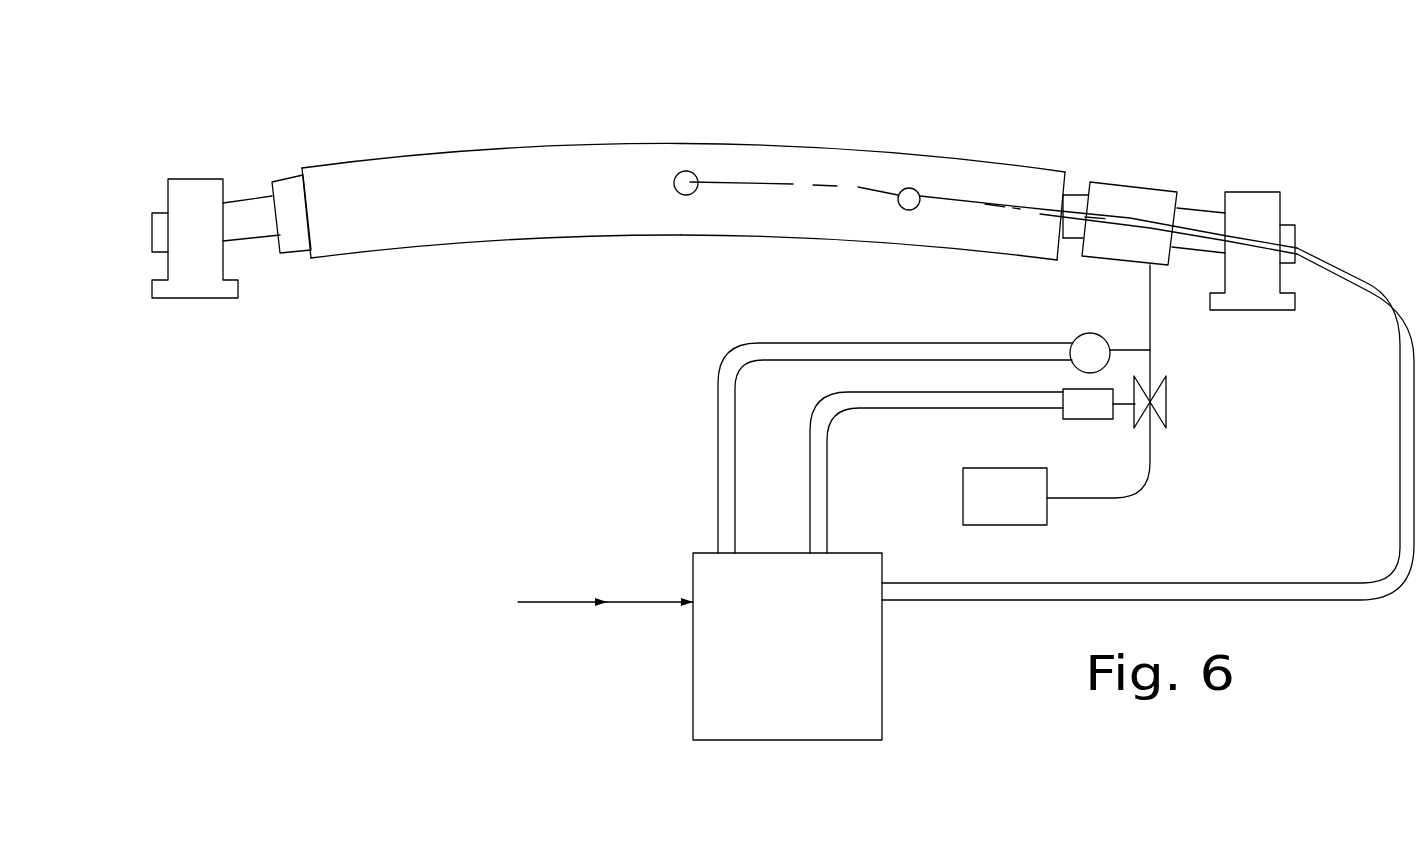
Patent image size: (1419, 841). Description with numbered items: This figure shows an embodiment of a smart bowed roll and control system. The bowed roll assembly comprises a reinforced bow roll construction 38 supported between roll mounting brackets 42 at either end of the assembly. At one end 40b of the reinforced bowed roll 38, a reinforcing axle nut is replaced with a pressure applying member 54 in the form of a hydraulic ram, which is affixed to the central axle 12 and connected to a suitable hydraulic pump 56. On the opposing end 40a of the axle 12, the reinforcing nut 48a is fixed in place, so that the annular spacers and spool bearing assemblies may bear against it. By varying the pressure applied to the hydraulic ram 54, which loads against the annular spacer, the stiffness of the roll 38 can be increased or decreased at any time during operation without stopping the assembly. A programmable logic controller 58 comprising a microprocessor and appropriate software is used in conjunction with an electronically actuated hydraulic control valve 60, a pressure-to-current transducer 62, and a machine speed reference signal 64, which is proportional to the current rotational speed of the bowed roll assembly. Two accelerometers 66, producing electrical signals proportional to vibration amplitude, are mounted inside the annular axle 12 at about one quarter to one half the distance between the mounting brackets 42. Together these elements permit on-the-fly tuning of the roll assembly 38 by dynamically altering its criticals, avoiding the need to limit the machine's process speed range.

The central axle 12 is at (245, 221).
The reinforced bow roll construction 38 is at (720, 155).
The opposing end 40a is at (318, 160).
The end 40b is at (1057, 167).
The roll mounting brackets 42 is at (198, 193).
The reinforcing nut 48a is at (282, 187).
The pressure applying member 54 is at (1143, 183).
The hydraulic pump 56 is at (1025, 508).
The programmable logic controller 58 is at (832, 684).
The electronically actuated hydraulic control valve 60 is at (1163, 393).
The pressure-to-current transducer 62 is at (1070, 338).
The machine speed reference signal 64 is at (583, 602).
The accelerometers 66 is at (680, 194).